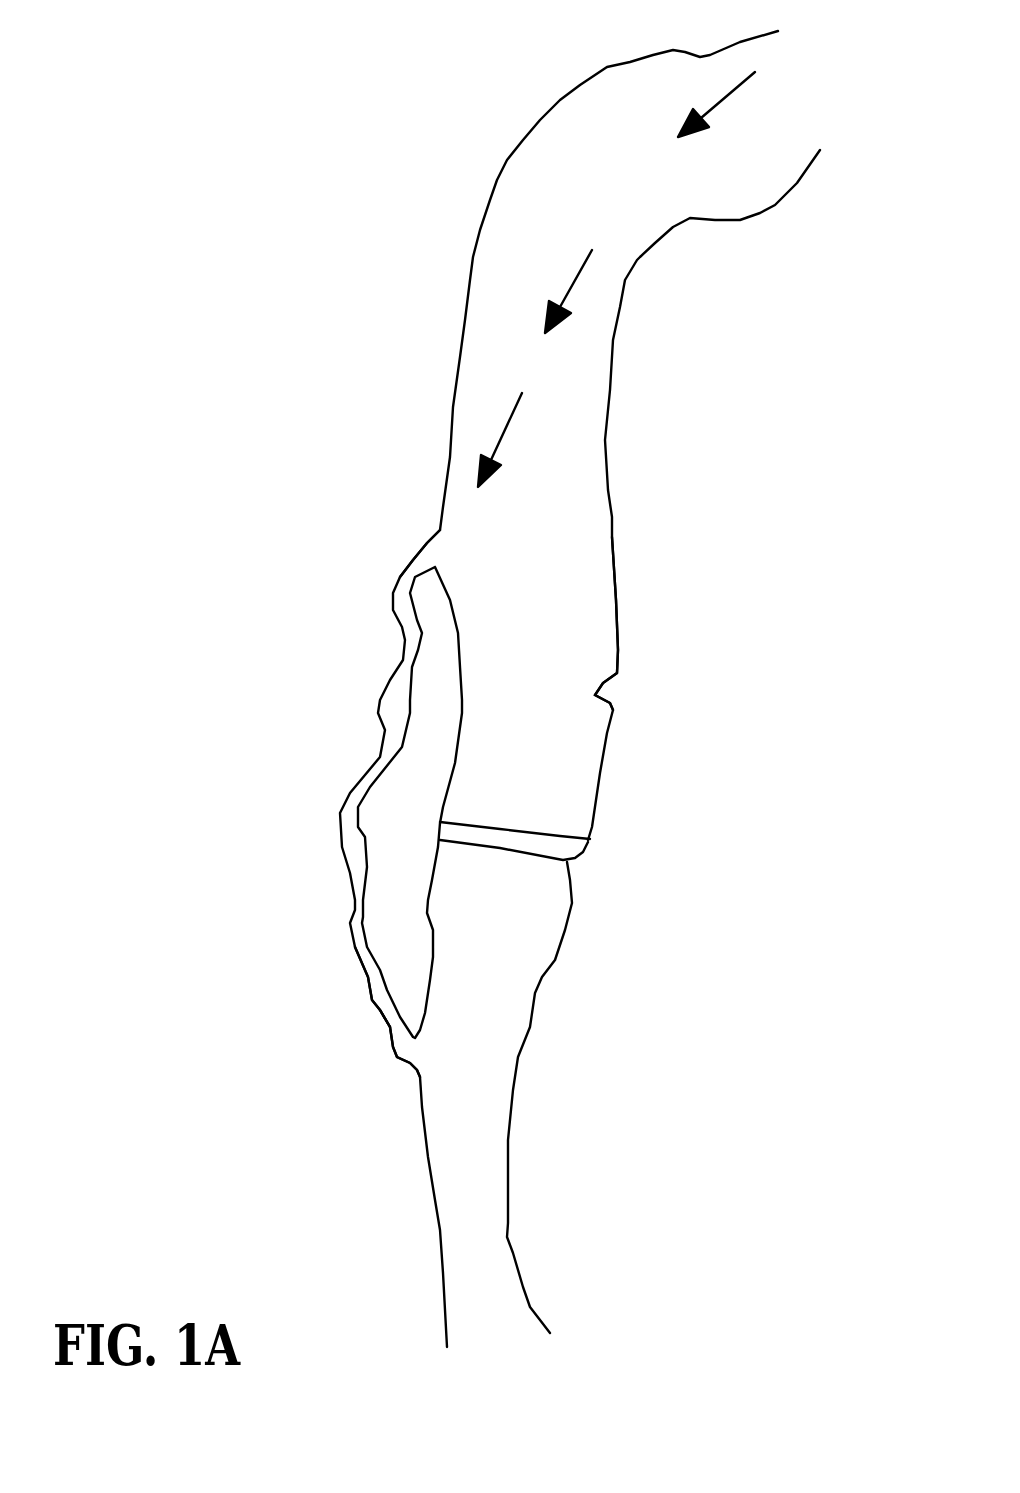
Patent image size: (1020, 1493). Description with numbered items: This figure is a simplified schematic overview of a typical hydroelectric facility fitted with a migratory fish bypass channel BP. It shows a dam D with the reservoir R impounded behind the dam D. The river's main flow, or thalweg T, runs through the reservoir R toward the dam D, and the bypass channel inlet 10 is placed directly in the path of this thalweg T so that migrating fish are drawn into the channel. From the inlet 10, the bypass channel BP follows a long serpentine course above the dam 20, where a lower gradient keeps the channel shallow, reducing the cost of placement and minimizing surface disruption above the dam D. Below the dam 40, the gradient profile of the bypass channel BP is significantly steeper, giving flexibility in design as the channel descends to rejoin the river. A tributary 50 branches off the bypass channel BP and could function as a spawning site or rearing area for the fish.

The bypass channel inlet 10 is at (433, 548).
The bypass channel gradient above the dam 20 is at (405, 632).
The migratory fish bypass channel BP is at (413, 558).
The reservoir R is at (595, 648).
The dam D is at (568, 847).
The gradient profile below the dam 40 is at (370, 998).
The tributary 50 is at (387, 1030).
The thalweg T is at (572, 282).